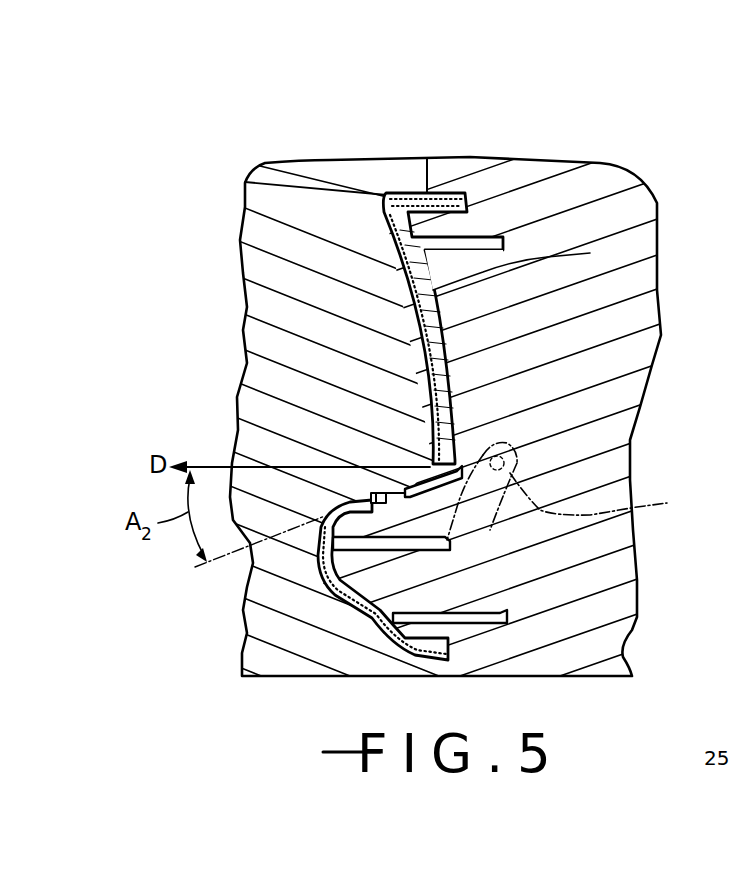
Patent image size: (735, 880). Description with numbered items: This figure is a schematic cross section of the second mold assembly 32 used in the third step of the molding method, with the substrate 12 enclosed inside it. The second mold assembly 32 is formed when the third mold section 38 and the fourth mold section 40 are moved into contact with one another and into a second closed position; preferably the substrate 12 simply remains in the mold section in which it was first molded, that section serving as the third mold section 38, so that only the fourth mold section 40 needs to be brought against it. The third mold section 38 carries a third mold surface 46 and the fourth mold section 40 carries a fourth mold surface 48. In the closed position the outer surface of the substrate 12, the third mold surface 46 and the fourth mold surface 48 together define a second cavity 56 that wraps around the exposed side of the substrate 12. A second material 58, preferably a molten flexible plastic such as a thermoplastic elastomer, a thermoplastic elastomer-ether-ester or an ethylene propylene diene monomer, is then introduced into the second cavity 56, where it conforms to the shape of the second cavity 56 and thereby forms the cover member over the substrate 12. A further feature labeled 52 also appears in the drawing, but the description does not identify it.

The second mold assembly 32 is at (482, 128).
The third mold section 38 is at (558, 173).
The fourth mold section 40 is at (358, 167).
The second cavity 56 is at (405, 292).
The second material 58 is at (378, 230).
The third mold surface 46 is at (457, 340).
The fourth mold surface 48 is at (430, 373).
The substrate 12 is at (590, 253).
The pivot member 52 is at (667, 503).